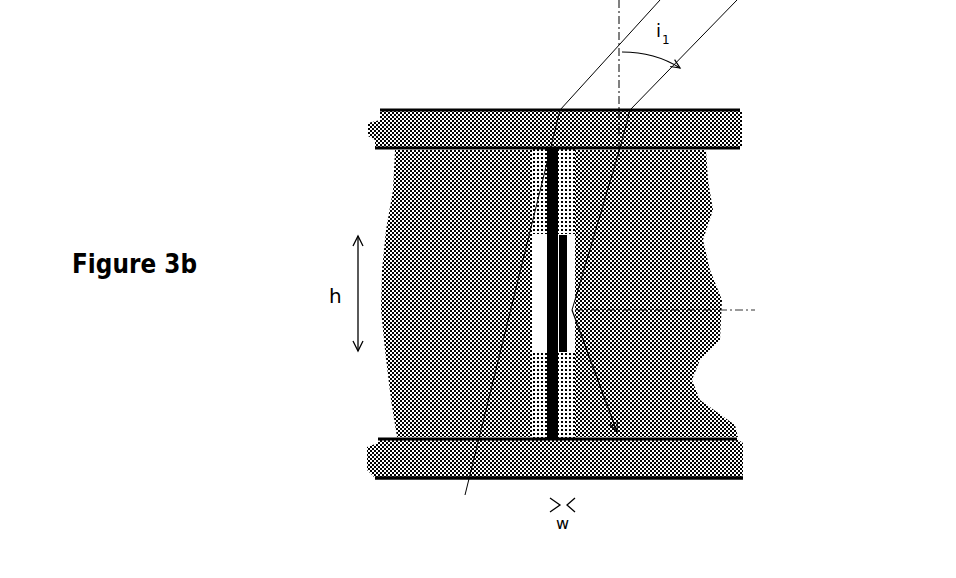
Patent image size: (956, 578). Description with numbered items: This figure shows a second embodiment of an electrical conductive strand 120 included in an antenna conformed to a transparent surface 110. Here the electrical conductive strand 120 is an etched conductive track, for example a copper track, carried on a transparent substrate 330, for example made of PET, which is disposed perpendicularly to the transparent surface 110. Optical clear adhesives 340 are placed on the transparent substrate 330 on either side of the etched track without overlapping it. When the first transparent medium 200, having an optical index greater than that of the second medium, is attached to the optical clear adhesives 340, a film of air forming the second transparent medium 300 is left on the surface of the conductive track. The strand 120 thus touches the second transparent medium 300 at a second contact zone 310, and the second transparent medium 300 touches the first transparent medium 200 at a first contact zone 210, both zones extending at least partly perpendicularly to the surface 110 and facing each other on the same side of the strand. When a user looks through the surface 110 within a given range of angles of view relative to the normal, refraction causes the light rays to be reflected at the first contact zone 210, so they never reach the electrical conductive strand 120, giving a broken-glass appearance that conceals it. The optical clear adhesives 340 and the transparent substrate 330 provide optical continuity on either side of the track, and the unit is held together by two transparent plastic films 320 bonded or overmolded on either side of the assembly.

The transparent surface 110 is at (723, 478).
The electrical conductive strand 120 is at (574, 312).
The first transparent medium 200 is at (416, 383).
The first contact zone 210 is at (577, 300).
The second transparent medium 300 is at (572, 257).
The second contact zone 310 is at (566, 283).
The films 320 is at (735, 130).
The transparent substrate 330 is at (548, 148).
The optical clear adhesives 340 is at (570, 200).